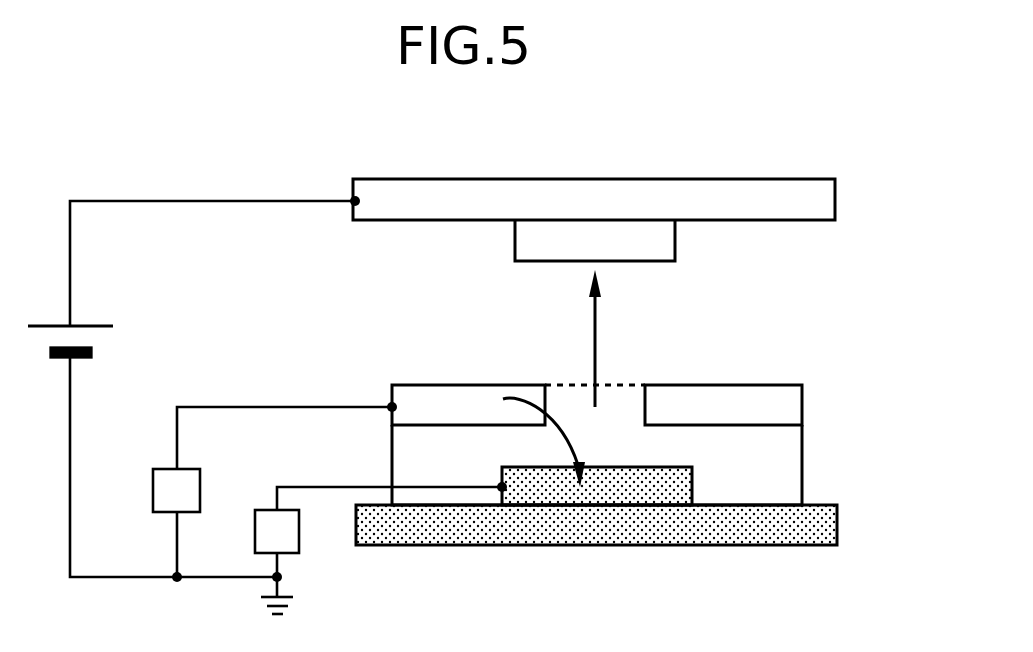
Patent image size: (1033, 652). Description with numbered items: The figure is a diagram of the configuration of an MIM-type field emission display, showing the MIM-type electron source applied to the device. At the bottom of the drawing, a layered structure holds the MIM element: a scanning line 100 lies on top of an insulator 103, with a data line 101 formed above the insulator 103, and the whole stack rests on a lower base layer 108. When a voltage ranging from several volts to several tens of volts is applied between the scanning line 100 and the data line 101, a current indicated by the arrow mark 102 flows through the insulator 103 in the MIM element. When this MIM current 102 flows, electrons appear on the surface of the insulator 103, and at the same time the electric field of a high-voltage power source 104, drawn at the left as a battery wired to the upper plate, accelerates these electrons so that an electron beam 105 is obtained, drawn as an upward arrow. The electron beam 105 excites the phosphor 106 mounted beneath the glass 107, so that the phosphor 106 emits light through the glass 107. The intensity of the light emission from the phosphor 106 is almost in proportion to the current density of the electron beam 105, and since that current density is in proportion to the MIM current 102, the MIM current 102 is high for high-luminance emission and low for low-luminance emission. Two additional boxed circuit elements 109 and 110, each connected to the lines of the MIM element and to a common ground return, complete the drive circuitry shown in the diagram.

The scanning line 100 is at (695, 483).
The data line 101 is at (802, 403).
The MIM current 102 is at (527, 388).
The insulator 103 is at (802, 463).
The high-voltage power source 104 is at (92, 325).
The electron beam 105 is at (597, 320).
The phosphor 106 is at (675, 238).
The glass 107 is at (835, 198).
The base stage 108 is at (837, 523).
The ground circuit 109 is at (263, 508).
The bias circuit 110 is at (165, 468).